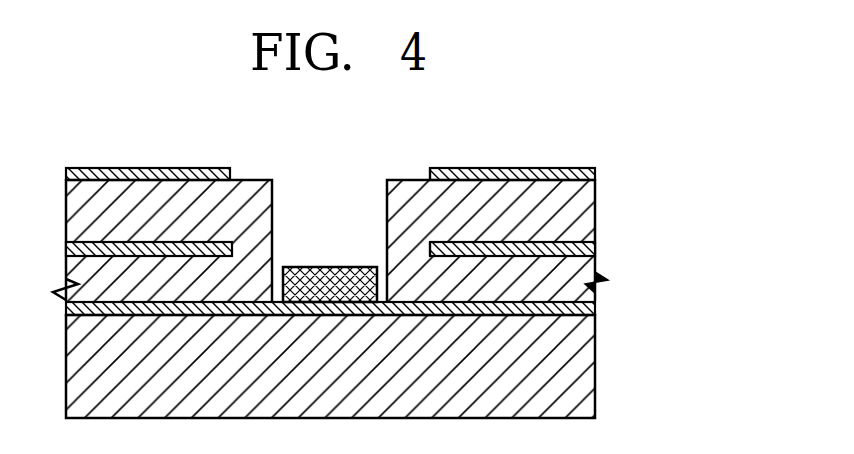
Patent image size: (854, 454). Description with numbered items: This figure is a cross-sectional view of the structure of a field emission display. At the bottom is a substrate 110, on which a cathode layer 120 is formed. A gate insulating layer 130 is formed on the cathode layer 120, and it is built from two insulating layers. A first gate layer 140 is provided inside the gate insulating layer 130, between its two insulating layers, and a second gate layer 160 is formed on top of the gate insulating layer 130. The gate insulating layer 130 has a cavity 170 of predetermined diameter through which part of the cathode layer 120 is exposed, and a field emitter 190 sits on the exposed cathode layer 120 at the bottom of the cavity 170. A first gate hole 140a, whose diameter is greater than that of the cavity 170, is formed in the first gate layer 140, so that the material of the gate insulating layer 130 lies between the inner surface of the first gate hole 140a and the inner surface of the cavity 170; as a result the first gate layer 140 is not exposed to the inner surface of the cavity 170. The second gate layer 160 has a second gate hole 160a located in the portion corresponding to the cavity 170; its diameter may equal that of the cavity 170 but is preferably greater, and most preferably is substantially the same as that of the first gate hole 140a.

The substrate 110 is at (600, 358).
The cathode layer 120 is at (595, 310).
The gate insulating layer 130 is at (608, 279).
The first gate layer 140 is at (595, 248).
The first gate hole 140a is at (430, 248).
The second gate layer 160 is at (595, 175).
The second gate hole 160a is at (430, 173).
The cavity 170 is at (277, 257).
The field emitter 190 is at (328, 267).